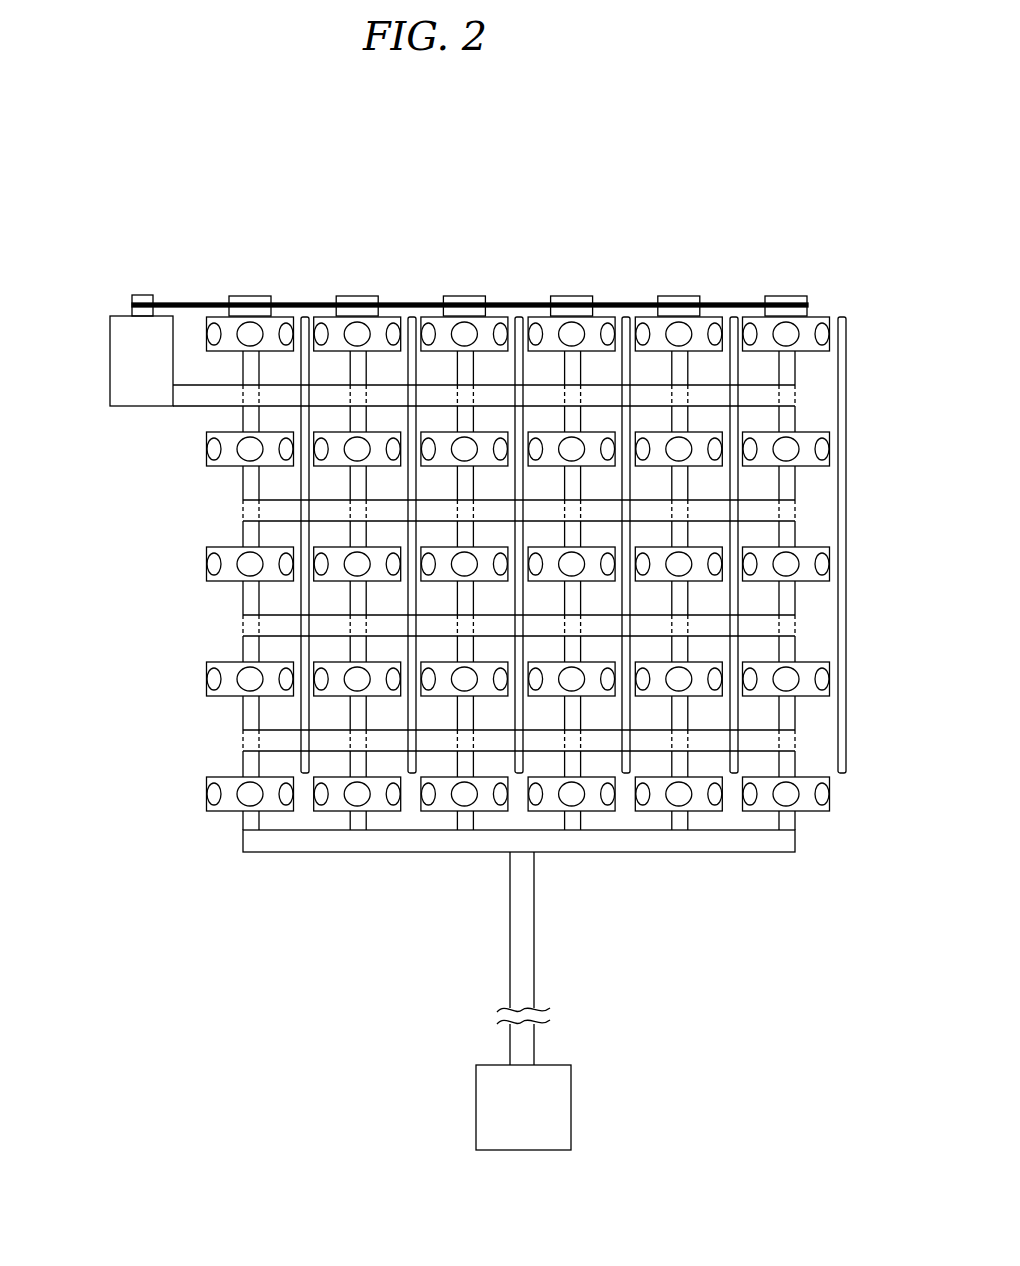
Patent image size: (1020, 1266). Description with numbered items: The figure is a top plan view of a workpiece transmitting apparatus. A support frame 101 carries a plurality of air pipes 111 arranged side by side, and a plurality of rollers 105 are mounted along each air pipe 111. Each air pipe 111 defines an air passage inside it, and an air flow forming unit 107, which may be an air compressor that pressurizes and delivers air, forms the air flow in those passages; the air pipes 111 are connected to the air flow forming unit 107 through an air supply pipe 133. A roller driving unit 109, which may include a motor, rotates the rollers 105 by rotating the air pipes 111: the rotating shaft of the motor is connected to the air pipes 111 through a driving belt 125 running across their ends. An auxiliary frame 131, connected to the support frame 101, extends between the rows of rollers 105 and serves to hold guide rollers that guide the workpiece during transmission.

The support frame 101 is at (270, 622).
The rollers 105 is at (700, 327).
The air flow forming unit 107 is at (571, 1110).
The roller driving unit 109 is at (110, 351).
The air pipes 111 is at (455, 347).
The driving belt 125 is at (197, 303).
The auxiliary frame 131 is at (730, 373).
The air supply pipe 133 is at (534, 912).